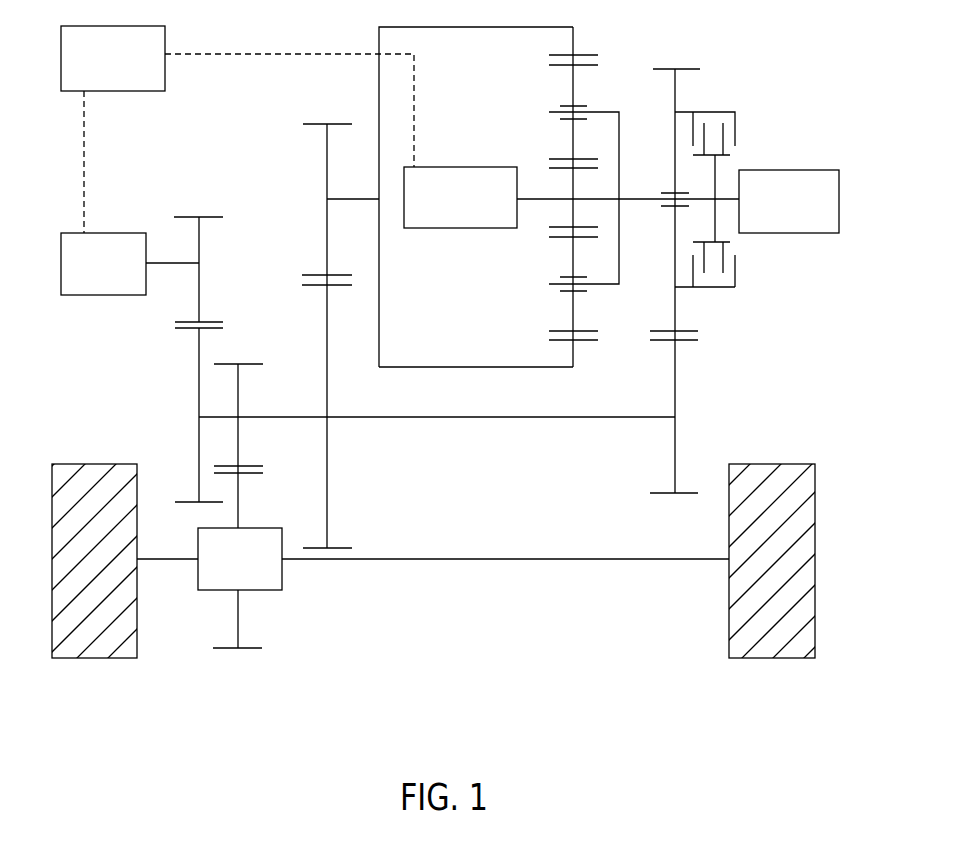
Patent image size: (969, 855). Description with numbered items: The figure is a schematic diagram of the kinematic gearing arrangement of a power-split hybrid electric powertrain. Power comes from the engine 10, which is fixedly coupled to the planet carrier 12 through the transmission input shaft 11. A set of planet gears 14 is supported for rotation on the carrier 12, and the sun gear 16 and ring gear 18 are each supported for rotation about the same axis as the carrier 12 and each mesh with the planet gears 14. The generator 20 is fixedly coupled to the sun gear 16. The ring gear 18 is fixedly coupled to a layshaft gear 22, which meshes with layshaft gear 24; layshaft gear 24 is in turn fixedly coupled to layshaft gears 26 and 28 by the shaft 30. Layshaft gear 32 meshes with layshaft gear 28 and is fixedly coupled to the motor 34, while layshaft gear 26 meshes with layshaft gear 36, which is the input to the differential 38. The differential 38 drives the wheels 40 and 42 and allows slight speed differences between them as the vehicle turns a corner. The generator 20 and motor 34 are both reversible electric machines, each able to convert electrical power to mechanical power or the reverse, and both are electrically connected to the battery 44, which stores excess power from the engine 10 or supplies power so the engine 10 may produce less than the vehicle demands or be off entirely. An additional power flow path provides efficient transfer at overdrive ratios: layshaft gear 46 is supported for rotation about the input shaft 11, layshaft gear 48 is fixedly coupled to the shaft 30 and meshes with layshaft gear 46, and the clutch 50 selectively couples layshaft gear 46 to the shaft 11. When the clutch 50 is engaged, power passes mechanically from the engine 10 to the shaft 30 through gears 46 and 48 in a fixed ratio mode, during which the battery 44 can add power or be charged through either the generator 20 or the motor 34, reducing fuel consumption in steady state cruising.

The engine 10 is at (790, 170).
The transmission input shaft 11 is at (636, 199).
The planet carrier 12 is at (619, 232).
The planet gears 14 is at (573, 305).
The sun gear 16 is at (573, 172).
The ring gear 18 is at (573, 352).
The generator 20 is at (454, 167).
The layshaft gear 22 is at (327, 174).
The layshaft gear 24 is at (327, 498).
The layshaft gear 26 is at (238, 382).
The layshaft gear 28 is at (199, 368).
The shaft 30 is at (527, 417).
The layshaft gear 32 is at (199, 237).
The motor 34 is at (103, 233).
The layshaft gear 36 is at (238, 620).
The differential 38 is at (282, 573).
The wheel 40 is at (73, 463).
The wheel 42 is at (729, 578).
The battery 44 is at (143, 91).
The layshaft gear 46 is at (675, 78).
The layshaft gear 48 is at (675, 430).
The clutch 50 is at (716, 112).